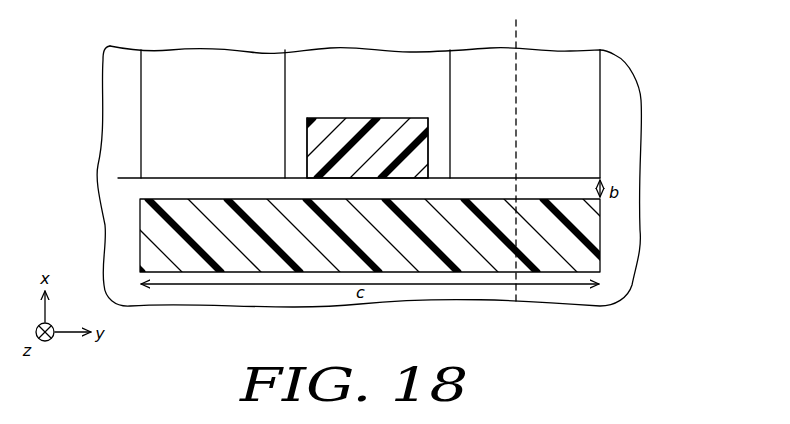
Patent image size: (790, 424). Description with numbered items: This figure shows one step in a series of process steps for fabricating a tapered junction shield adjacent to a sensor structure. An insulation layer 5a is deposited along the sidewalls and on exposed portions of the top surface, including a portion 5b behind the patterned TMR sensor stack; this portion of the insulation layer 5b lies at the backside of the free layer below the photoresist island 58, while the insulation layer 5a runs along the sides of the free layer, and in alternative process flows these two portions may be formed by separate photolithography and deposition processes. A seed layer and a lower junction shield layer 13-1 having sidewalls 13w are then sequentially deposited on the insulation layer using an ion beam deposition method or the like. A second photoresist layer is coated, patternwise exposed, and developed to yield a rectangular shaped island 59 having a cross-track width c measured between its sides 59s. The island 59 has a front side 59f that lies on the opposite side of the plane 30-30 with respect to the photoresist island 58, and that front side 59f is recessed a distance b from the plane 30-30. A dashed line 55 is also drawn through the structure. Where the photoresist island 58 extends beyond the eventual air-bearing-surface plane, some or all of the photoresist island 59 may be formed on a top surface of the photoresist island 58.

The lower JS layer 13-1 is at (209, 78).
The sidewalls of lower JS layer 13w is at (141, 108).
The plane 30- 30 is at (118, 178).
The photoresist island 58 is at (355, 135).
The insulation layer 5a is at (295, 145).
The portion of insulation layer 5b is at (400, 62).
The cut line 55 is at (516, 169).
The rectangular shaped island 59 is at (252, 245).
The front side of island 59f is at (303, 200).
The sides of island 59s is at (140, 222).